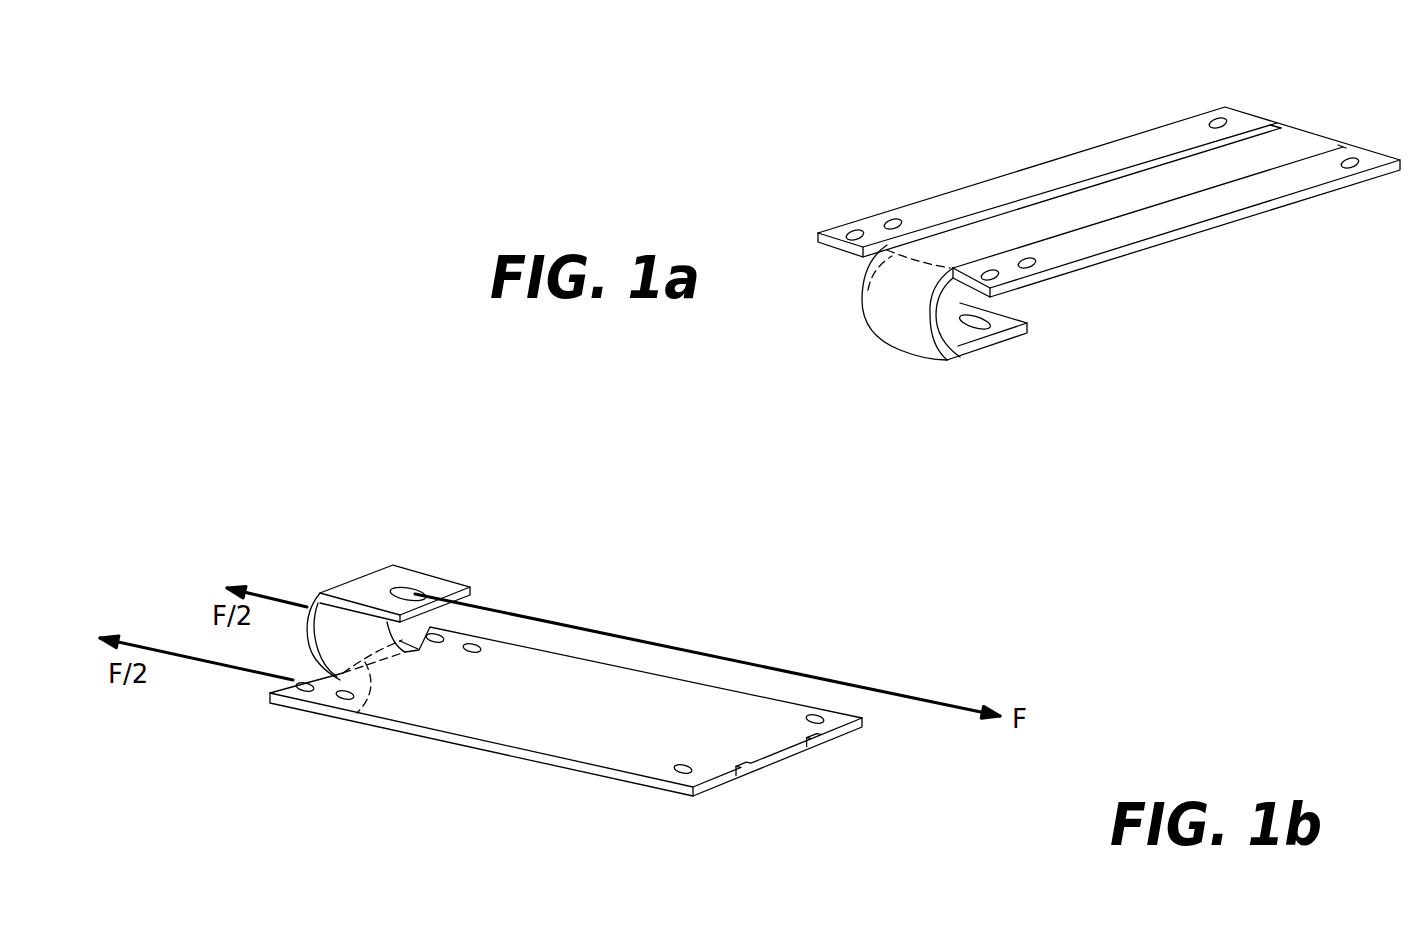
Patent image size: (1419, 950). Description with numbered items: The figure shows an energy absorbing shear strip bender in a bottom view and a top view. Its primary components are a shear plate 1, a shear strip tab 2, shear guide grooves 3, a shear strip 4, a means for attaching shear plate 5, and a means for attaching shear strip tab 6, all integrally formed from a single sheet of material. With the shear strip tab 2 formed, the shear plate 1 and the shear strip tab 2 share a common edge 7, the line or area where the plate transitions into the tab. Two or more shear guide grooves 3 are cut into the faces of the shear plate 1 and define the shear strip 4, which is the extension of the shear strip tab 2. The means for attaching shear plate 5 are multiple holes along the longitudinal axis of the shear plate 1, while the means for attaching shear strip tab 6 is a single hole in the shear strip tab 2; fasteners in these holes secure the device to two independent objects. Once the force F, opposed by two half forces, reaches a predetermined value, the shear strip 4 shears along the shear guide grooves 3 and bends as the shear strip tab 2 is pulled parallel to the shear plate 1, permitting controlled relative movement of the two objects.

In FIG. 1a, the shear plate 1 is at (1092, 162).
In FIG. 1b, the shear plate 1 is at (550, 707).
In FIG. 1a, the shear strip tab 2 is at (955, 338).
In FIG. 1b, the shear strip tab 2 is at (360, 587).
In FIG. 1a, the shear guide grooves 3 is at (1280, 125).
In FIG. 1b, the shear guide grooves 3 is at (747, 777).
In FIG. 1a, the shear strip 4 is at (1180, 177).
In FIG. 1a, the means for attaching shear plate 5 is at (855, 232).
In FIG. 1b, the means for attaching shear plate 5 is at (672, 770).
In FIG. 1a, the means for attaching shear strip tab 6 is at (980, 324).
In FIG. 1b, the means for attaching shear strip tab 6 is at (408, 588).
In FIG. 1a, the common edge 7 is at (862, 297).
In FIG. 1b, the common edge 7 is at (343, 720).